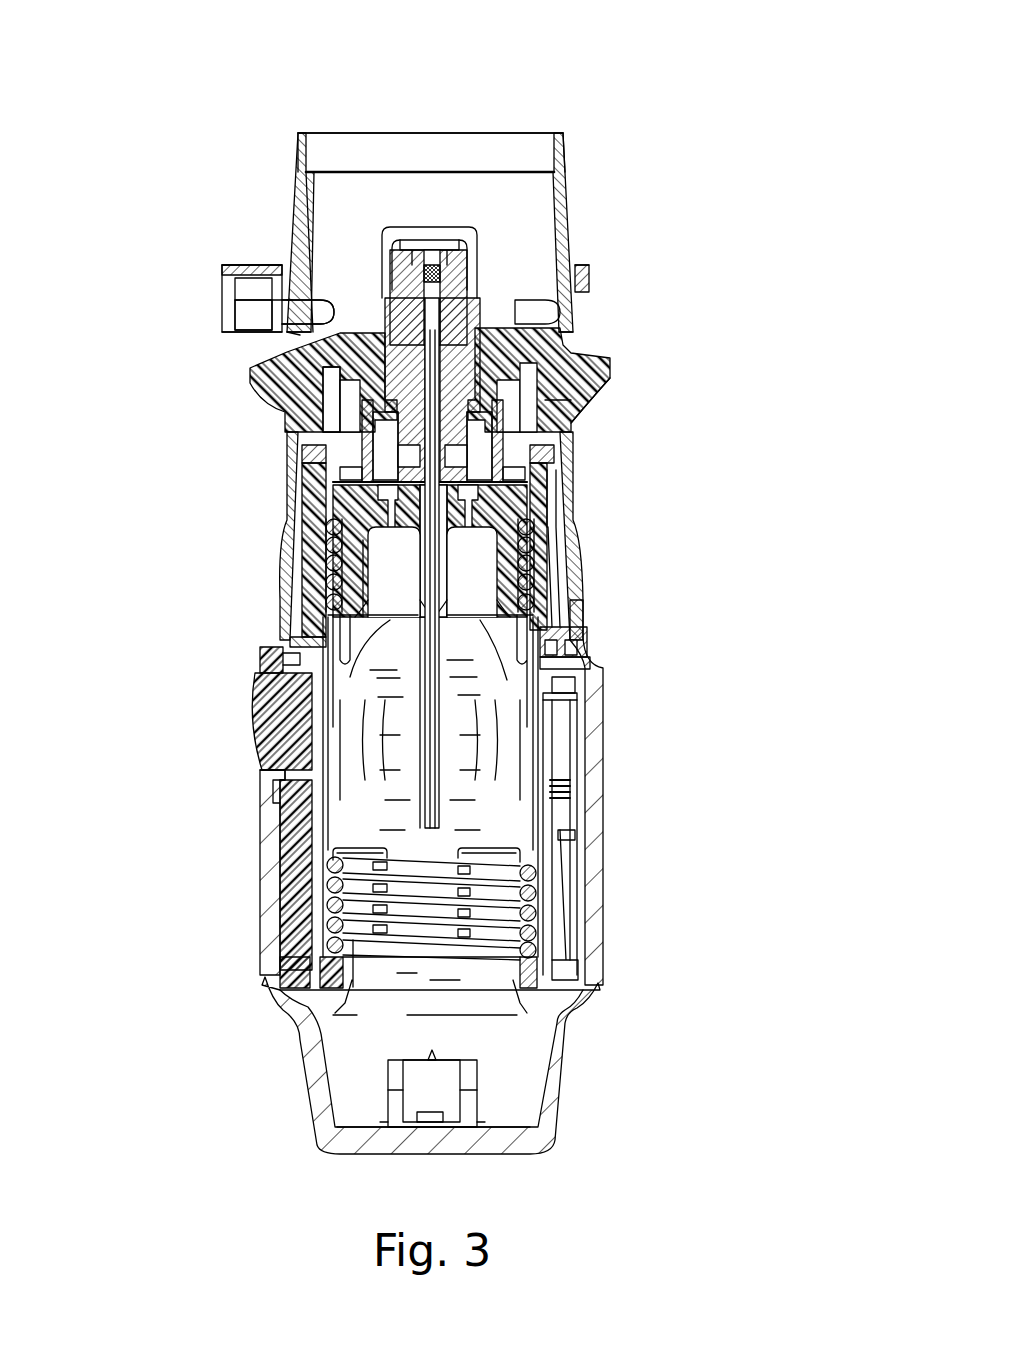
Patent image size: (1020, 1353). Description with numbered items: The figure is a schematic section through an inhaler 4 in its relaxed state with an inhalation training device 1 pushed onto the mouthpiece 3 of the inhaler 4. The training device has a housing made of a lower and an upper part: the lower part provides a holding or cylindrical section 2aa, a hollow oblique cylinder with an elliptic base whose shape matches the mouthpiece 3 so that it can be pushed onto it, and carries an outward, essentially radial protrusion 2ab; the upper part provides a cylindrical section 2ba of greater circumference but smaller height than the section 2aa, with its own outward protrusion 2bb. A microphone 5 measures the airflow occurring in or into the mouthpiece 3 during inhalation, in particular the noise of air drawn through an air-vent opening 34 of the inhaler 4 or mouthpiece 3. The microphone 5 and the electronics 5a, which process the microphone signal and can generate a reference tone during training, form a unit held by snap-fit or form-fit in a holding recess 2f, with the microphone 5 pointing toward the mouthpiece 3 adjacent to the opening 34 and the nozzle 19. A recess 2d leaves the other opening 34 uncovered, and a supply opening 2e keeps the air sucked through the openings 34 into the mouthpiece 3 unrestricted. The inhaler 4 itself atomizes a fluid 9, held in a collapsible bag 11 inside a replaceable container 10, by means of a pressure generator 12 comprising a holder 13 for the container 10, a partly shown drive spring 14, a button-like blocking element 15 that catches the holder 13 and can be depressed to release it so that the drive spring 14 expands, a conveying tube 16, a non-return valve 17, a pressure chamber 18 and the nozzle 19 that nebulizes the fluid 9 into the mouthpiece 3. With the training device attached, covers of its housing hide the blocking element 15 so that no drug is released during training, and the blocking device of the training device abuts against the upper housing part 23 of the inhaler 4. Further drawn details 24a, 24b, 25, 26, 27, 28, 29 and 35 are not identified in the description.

The inhalation training device 1 is at (590, 183).
The holding or cylindrical section 2aa is at (300, 152).
The outward protrusion 2ab is at (277, 285).
The cylindrical section 2ba is at (590, 265).
The outward protrusion 2bb is at (290, 268).
The recess 2d is at (590, 278).
The supply opening 2e is at (292, 262).
The holding recess 2f is at (270, 296).
The mouthpiece 3 is at (300, 200).
The inhaler 4 is at (240, 1145).
The microphone 5 is at (300, 308).
The electronics 5a is at (250, 318).
The fluid 9 is at (455, 781).
The container 10 is at (548, 813).
The collapsible bag 11 is at (545, 866).
The pressure generator 12 is at (427, 353).
The holder 13 is at (540, 502).
The drive spring 14 is at (540, 567).
The blocking element 15 is at (543, 403).
The conveying tube 16 is at (473, 373).
The non-return valve 17 is at (475, 300).
The pressure chamber 18 is at (457, 283).
The nozzle 19 is at (443, 226).
The upper housing part 23 is at (295, 485).
The collar 24a is at (288, 590).
The bulge 24b is at (318, 700).
The outer sleeve 25 is at (267, 883).
The bulge groove 26 is at (273, 728).
The bottom insert 27 is at (470, 1072).
The bottom plate 28 is at (530, 1020).
The nipple 29 is at (428, 1053).
The opening 34 is at (322, 333).
The dispenser assembly 35 is at (680, 98).